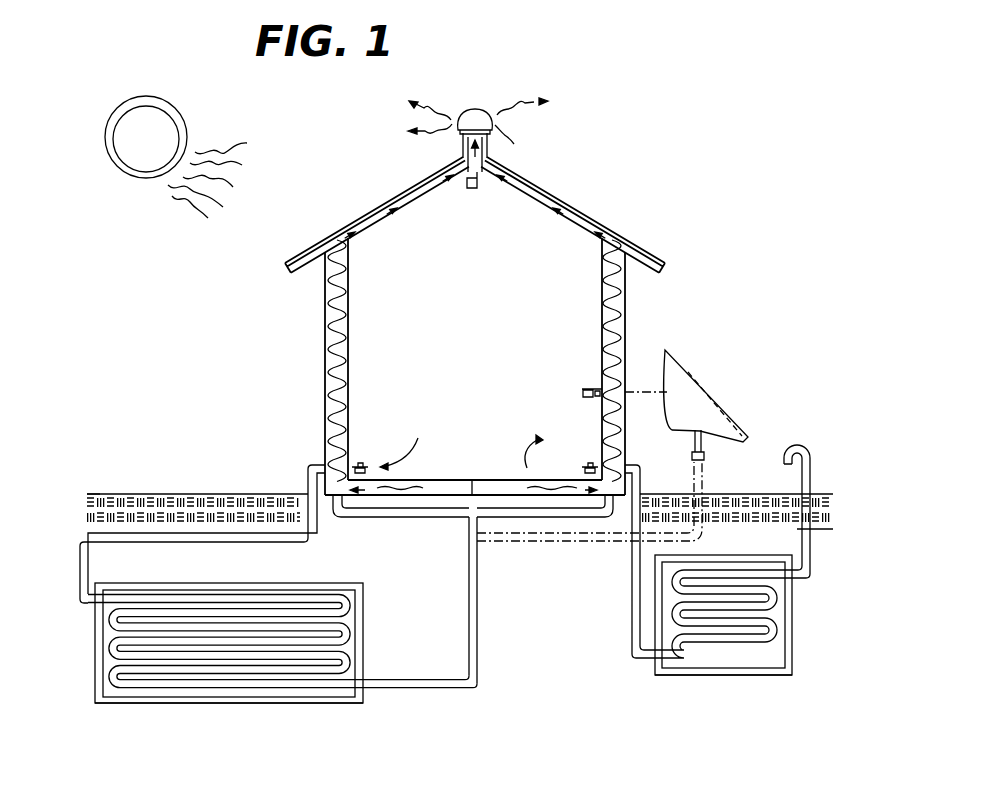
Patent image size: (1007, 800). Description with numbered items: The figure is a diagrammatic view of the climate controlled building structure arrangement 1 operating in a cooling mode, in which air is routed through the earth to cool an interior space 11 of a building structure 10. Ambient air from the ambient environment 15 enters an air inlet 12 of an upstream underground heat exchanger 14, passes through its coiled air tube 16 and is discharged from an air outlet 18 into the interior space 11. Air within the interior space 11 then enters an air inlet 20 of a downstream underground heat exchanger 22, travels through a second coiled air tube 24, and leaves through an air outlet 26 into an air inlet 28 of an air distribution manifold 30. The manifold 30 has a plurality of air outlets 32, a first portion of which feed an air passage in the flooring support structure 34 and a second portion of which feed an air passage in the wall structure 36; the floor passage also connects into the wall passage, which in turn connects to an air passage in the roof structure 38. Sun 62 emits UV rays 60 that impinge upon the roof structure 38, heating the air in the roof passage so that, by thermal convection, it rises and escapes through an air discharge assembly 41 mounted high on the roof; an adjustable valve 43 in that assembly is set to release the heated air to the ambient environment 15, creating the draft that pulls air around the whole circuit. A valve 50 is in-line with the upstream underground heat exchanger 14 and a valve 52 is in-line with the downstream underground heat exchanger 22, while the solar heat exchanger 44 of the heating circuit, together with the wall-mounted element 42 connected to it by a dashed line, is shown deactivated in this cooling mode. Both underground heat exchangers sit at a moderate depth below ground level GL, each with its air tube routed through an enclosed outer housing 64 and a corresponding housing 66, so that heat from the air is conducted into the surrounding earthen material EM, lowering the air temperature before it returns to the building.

The climate controlled building structure arrangement 1 is at (466, 277).
The building structure 10 is at (318, 379).
The interior space 11 is at (488, 326).
The air inlet 12 is at (790, 447).
The upstream underground heat exchanger 14 is at (792, 600).
The ambient environment 15 is at (704, 194).
The air tube 16 is at (770, 623).
The air outlet 18 is at (597, 465).
The air inlet 20 is at (353, 462).
The downstream underground heat exchanger 22 is at (362, 636).
The air tube 24 is at (347, 611).
The air outlet 26 is at (477, 566).
The air inlet 28 is at (482, 532).
The air distribution manifold 30 is at (470, 522).
The air outlets 32 is at (334, 495).
The flooring support structure 34 is at (478, 482).
The wall structure 36 is at (323, 333).
The roof structure 38 is at (343, 222).
The air discharge assembly 41 is at (472, 118).
The wall mounted heating element 42 is at (597, 388).
The adjustable valve 43 is at (474, 190).
The solar heat exchanger 44 is at (697, 380).
The valve 50 is at (522, 453).
The valve 52 is at (580, 390).
The UV rays 60 is at (197, 202).
The sun 62 is at (174, 124).
The outer housing 64 is at (698, 672).
The underground exchanger housing 66 is at (225, 704).
The ground level GL is at (183, 492).
The earthen material EM is at (86, 500).